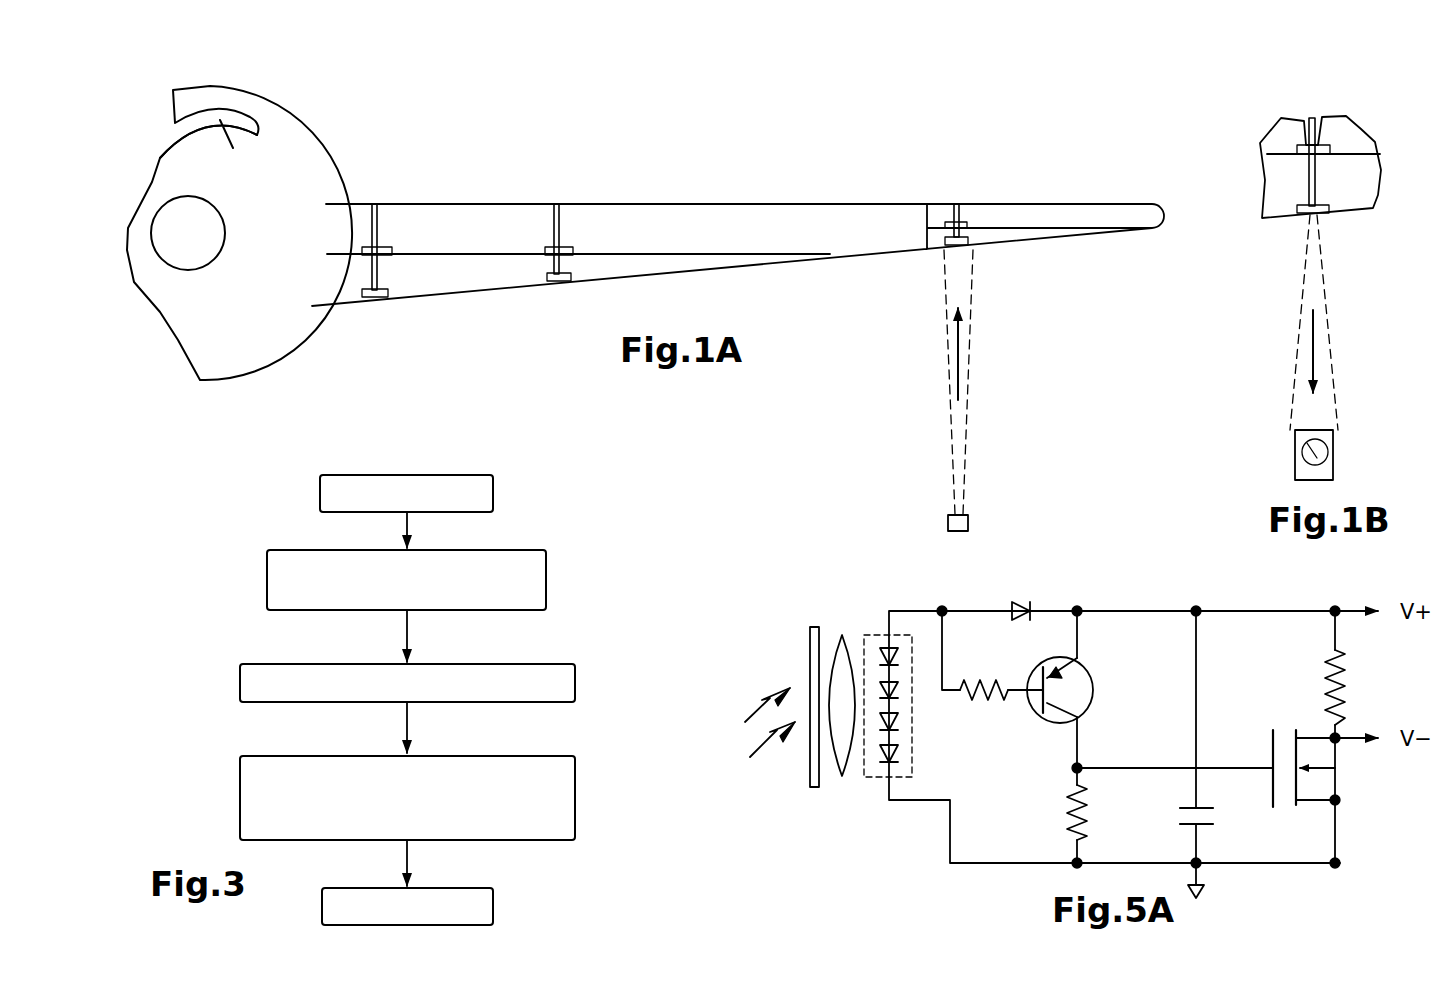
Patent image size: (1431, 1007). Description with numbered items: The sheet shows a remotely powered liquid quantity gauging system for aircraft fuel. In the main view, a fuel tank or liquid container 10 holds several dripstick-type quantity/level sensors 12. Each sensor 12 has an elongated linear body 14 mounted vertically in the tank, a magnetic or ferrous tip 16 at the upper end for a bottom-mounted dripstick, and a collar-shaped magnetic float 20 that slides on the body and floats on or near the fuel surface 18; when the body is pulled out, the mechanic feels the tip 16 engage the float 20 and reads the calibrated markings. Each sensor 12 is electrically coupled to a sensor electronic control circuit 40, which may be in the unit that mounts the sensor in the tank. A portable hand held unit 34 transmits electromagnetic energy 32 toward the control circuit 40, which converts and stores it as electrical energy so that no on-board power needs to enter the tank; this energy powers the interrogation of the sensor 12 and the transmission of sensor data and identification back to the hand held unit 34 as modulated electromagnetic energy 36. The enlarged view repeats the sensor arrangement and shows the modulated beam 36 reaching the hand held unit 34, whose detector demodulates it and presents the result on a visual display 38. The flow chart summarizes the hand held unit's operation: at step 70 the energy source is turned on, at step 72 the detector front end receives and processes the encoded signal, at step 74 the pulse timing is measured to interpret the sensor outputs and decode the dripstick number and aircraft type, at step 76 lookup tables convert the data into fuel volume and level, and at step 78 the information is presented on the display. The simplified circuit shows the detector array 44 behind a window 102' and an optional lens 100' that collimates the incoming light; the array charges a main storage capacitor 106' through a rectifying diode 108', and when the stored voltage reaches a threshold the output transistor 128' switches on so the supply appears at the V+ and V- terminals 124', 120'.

In FIG. 1A, the fuel tank or liquid container 10 is at (722, 212).
In FIG. 1B, the fuel tank or liquid container 10 is at (1278, 139).
In FIG. 1A, the quantity/level sensor 12 is at (392, 230).
In FIG. 1B, the quantity/level sensor 12 is at (1340, 140).
In FIG. 1A, the elongated linear body 14 is at (372, 272).
In FIG. 1B, the elongated linear body 14 is at (1322, 187).
In FIG. 1A, the magnetic or ferrous tip 16 is at (372, 206).
In FIG. 1A, the fuel surface 18 is at (630, 254).
In FIG. 1B, the fuel surface 18 is at (1362, 142).
In FIG. 1A, the magnetic float 20 is at (393, 252).
In FIG. 1B, the magnetic float 20 is at (1303, 142).
In FIG. 1A, the electromagnetic energy 32 is at (975, 365).
In FIG. 1A, the remote control hand held unit 34 is at (970, 524).
In FIG. 1B, the remote control hand held unit 34 is at (1295, 440).
In FIG. 1B, the modulated electromagnetic energy 36 is at (1327, 302).
In FIG. 1B, the visual display 38 is at (1333, 442).
In FIG. 1A, the sensor electronic control circuit 40 is at (395, 284).
In FIG. 1B, the sensor electronic control circuit 40 is at (1293, 203).
In FIG. 5A, the detector array 44 is at (862, 778).
In FIG. 3, the LED on timer step 70 is at (494, 492).
In FIG. 3, the detector front end amplifier step 72 is at (547, 580).
In FIG. 3, the pulse timing measurement step 74 is at (576, 690).
In FIG. 3, the output processing step 76 is at (576, 800).
In FIG. 3, the user display step 78 is at (494, 905).
In FIG. 5A, the lens 100' is at (851, 668).
In FIG. 5A, the window 102' is at (792, 679).
In FIG. 5A, the main storage capacitor 106' is at (1159, 806).
In FIG. 5A, the rectifying diode 108' is at (996, 592).
In FIG. 5A, the V- terminal 120' is at (1298, 884).
In FIG. 5A, the V+ terminal 124' is at (1289, 588).
In FIG. 5A, the output transistor 128' is at (1281, 747).